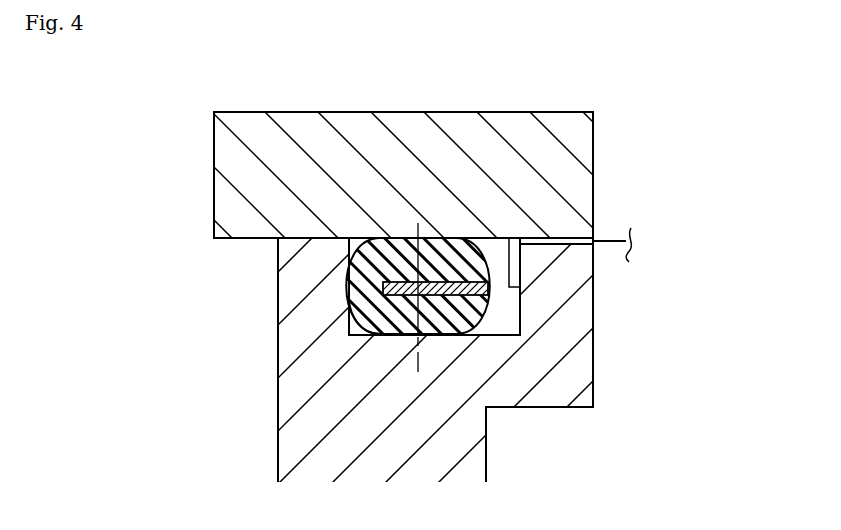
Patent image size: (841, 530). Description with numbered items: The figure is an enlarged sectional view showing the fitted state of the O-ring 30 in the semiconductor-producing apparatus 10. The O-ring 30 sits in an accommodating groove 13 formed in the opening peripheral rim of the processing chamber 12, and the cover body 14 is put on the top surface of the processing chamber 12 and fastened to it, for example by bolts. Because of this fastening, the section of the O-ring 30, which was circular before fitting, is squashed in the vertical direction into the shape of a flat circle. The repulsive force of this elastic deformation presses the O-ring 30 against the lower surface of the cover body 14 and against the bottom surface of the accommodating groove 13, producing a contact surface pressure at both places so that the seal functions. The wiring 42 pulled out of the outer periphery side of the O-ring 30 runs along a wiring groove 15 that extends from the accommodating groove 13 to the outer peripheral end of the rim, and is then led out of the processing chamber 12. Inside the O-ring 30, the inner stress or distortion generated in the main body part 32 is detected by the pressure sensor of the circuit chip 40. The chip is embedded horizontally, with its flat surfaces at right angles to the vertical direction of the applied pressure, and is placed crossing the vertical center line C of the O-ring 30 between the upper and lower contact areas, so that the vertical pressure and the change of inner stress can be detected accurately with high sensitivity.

The semiconductor-producing apparatus 10 is at (447, 112).
The processing chamber 12 is at (486, 453).
The accommodating groove 13 is at (500, 323).
The cover body 14 is at (593, 187).
The wiring groove 15 is at (592, 271).
The O-ring 30 is at (367, 238).
The main body part 32 is at (378, 274).
The circuit chip 40 is at (352, 308).
The wiring 42 is at (608, 241).
The vertical center line C is at (412, 225).